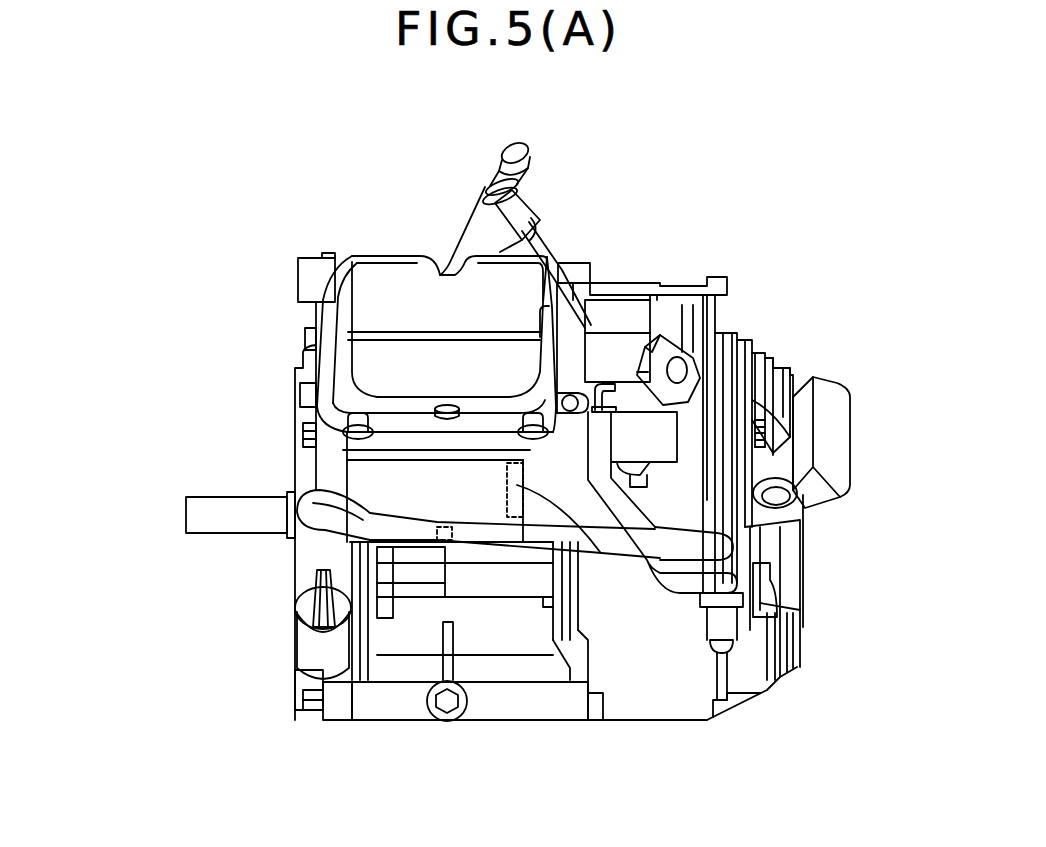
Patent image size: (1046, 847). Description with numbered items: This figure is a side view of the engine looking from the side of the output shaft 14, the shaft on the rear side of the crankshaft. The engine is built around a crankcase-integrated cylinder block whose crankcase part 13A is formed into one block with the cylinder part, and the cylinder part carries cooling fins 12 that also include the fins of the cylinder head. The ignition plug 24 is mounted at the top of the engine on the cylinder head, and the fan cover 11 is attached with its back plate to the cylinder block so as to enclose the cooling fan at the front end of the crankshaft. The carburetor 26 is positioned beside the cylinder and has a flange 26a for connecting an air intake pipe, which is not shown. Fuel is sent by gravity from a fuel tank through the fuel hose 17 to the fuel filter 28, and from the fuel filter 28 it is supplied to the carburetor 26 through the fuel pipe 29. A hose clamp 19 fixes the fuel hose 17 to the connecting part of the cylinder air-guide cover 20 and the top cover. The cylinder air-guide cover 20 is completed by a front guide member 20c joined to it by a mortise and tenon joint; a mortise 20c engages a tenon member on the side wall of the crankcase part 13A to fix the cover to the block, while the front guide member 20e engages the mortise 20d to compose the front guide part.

The fan cover 11 is at (670, 610).
The cooling fins 12 is at (307, 350).
The crankcase part 13A is at (413, 706).
The output shaft 14 is at (213, 517).
The fuel hose 17 is at (297, 497).
The hose clamp 19 is at (317, 397).
The cylinder air-guide cover 20 is at (353, 497).
The front guide member 20c is at (352, 543).
The mortise 20d is at (540, 455).
The front guide member 20e is at (567, 467).
The ignition plug 24 is at (519, 150).
The carburetor 26 is at (628, 343).
The flange 26a is at (677, 350).
The fuel filter 28 is at (723, 633).
The fuel pipe 29 is at (620, 520).